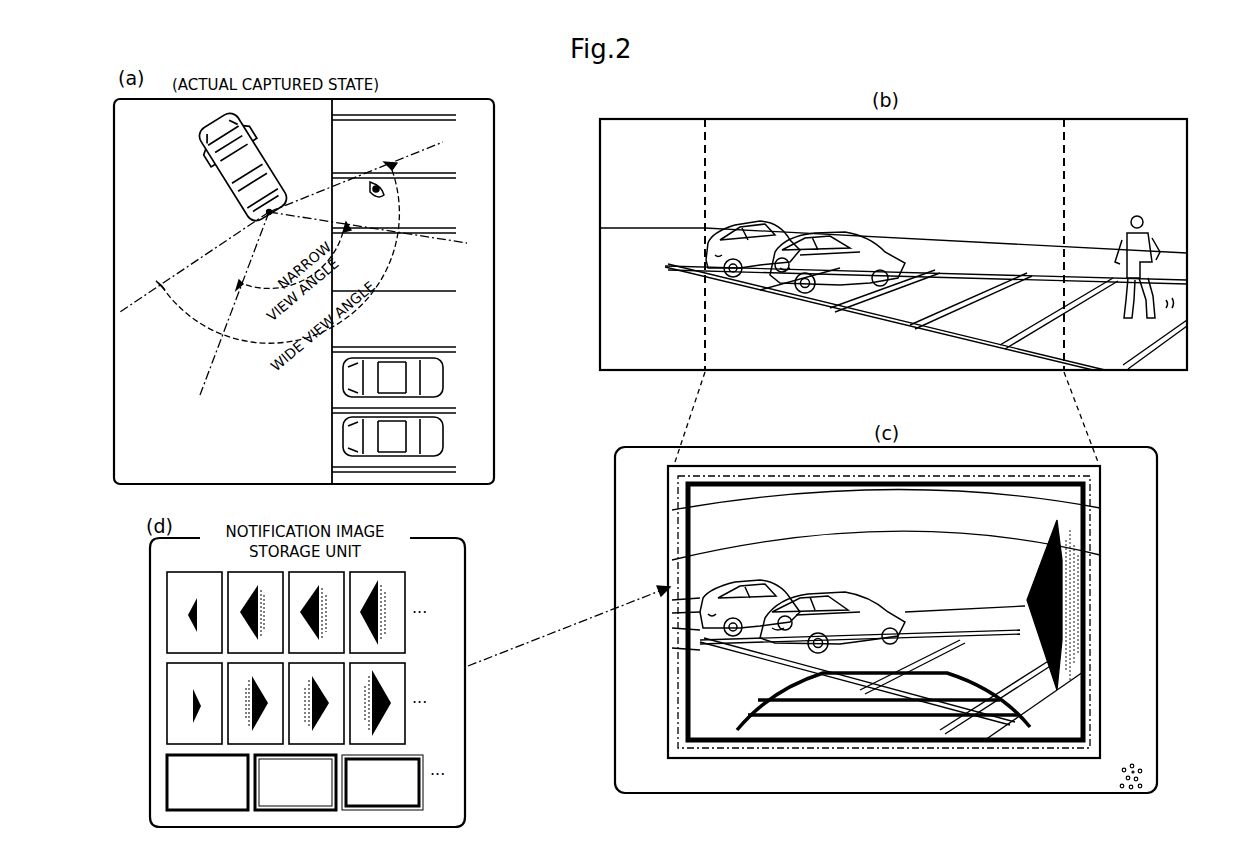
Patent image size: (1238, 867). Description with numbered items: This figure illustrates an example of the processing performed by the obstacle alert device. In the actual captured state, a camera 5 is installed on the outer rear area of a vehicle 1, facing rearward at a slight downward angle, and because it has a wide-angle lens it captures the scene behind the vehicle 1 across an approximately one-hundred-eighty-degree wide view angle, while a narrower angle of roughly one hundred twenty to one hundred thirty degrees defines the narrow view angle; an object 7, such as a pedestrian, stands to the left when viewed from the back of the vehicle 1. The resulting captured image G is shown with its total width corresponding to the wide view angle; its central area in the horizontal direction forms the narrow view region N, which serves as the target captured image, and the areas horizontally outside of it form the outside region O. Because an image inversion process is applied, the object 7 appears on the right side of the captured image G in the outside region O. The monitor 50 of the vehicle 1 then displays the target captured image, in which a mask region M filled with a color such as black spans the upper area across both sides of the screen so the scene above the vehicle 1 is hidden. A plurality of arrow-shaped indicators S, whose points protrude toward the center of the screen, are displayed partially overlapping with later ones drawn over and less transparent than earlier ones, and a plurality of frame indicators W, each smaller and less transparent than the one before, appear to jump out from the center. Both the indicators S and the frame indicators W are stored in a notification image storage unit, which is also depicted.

The vehicle 1 is at (268, 160).
The camera 5 is at (273, 215).
The object 7 is at (1118, 228).
The monitor 50 is at (615, 532).
The captured image G is at (600, 312).
The narrow view region N is at (797, 140).
The outside region O is at (634, 143).
The mask region M is at (710, 492).
The indicator S is at (1060, 560).
The frame indicator W is at (770, 742).